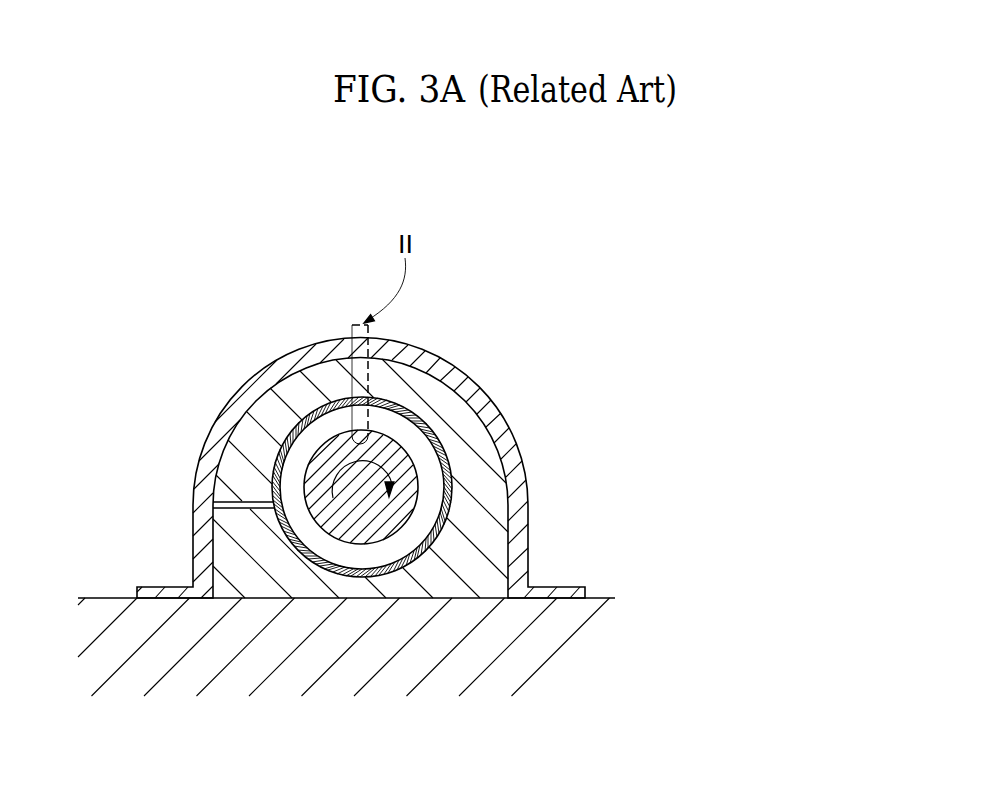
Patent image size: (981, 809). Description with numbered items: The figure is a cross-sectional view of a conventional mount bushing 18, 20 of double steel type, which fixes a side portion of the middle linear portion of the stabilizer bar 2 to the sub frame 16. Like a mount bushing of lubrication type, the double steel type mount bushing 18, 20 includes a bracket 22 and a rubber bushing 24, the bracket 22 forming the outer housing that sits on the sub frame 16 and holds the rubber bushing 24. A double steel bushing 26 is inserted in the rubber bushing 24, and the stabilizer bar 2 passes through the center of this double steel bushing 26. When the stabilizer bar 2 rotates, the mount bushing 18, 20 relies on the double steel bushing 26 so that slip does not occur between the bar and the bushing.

The stabilizer bar 2 is at (332, 468).
The sub frame 16 is at (374, 772).
The mount bushing 18 is at (367, 438).
The mount bushing 20 is at (367, 438).
The bracket 22 is at (502, 433).
The rubber bushing 24 is at (464, 504).
The double steel bushing 26 is at (429, 421).